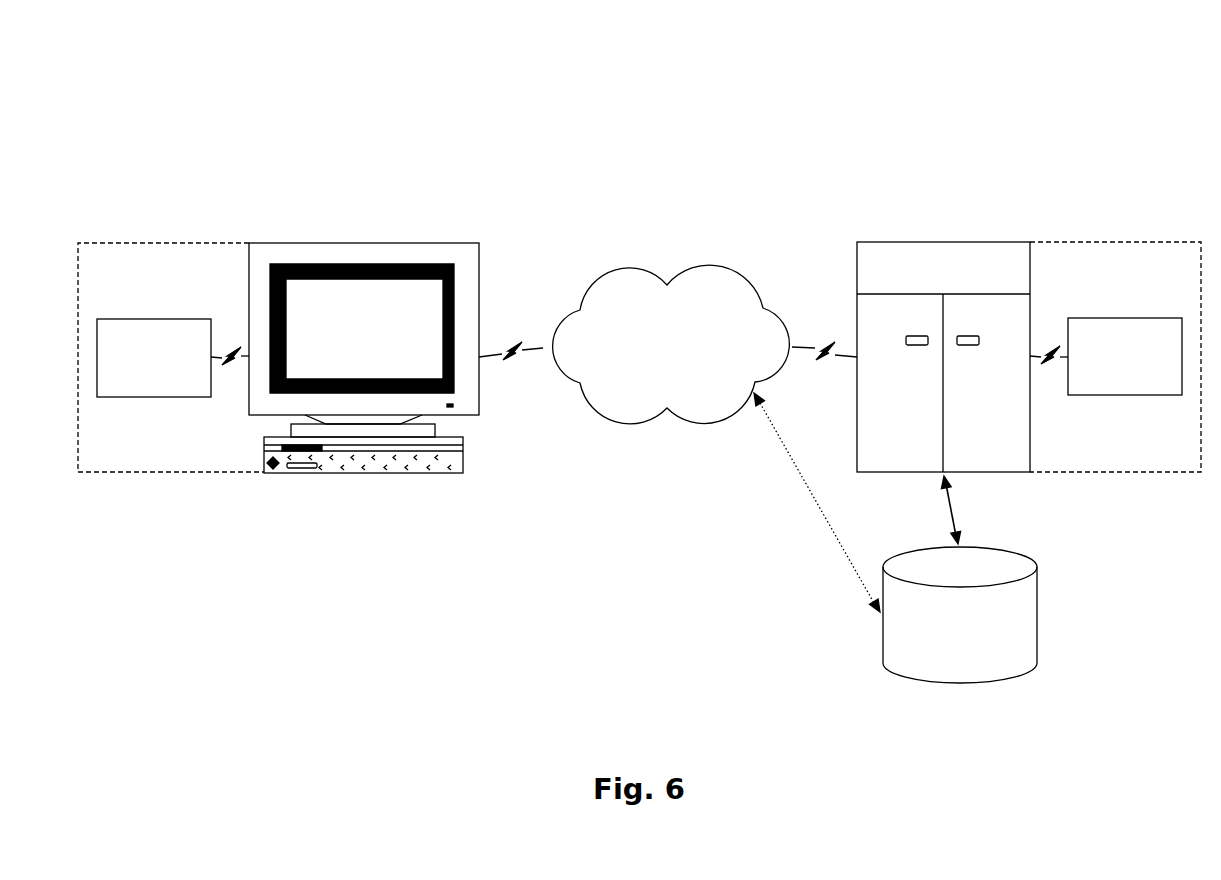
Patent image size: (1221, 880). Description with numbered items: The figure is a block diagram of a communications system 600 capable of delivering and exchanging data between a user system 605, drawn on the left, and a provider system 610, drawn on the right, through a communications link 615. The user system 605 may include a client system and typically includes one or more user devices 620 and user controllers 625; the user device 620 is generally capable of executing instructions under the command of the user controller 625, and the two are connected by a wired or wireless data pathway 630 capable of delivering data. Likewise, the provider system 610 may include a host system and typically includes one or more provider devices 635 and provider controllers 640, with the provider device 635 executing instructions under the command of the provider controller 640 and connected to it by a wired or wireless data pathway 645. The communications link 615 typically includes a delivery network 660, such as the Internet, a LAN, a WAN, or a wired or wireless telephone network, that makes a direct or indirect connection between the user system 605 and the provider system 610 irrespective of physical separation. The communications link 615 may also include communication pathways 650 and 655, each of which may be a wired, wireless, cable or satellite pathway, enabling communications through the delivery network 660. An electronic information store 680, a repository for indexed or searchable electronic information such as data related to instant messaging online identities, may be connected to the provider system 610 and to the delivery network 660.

The communications system 600 is at (580, 46).
The user system 605 is at (257, 198).
The provider system 610 is at (1037, 195).
The communications link 615 is at (665, 490).
The user device 620 is at (363, 243).
The user controller 625 is at (153, 319).
The data pathway 630 is at (228, 364).
The provider device 635 is at (943, 242).
The provider controller 640 is at (1127, 318).
The data pathway 645 is at (1045, 366).
The communication pathway 650 is at (505, 362).
The communication pathway 655 is at (827, 362).
The delivery network 660 is at (705, 423).
The electronic information store 680 is at (985, 547).